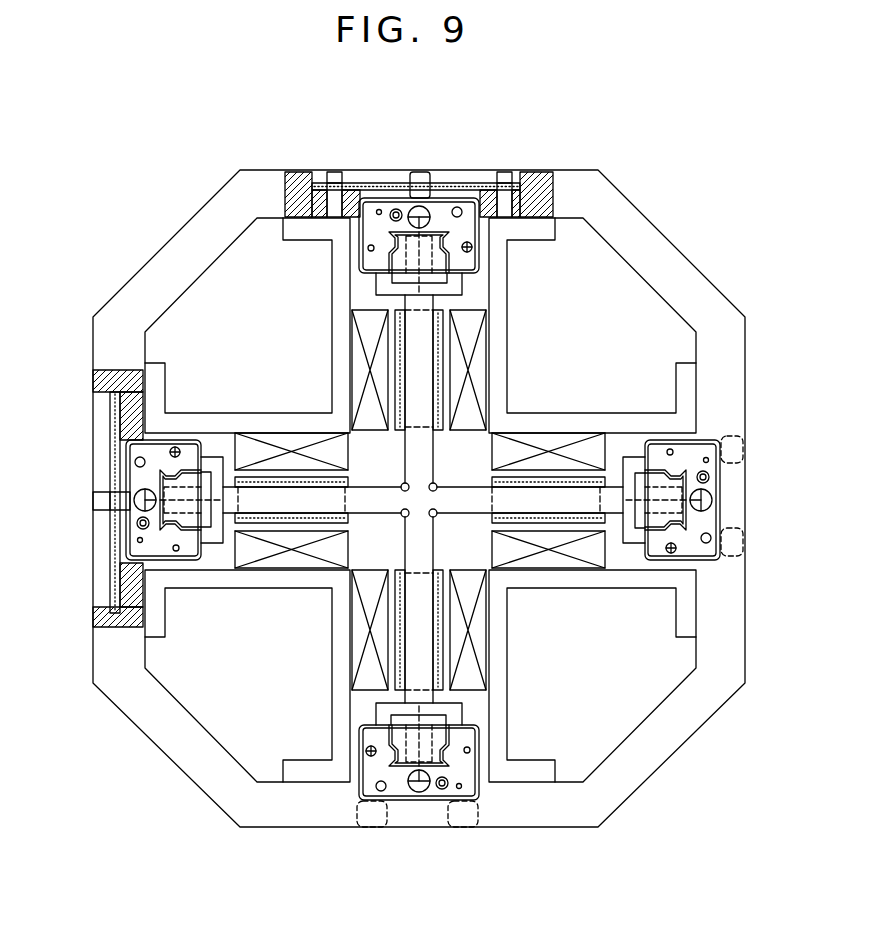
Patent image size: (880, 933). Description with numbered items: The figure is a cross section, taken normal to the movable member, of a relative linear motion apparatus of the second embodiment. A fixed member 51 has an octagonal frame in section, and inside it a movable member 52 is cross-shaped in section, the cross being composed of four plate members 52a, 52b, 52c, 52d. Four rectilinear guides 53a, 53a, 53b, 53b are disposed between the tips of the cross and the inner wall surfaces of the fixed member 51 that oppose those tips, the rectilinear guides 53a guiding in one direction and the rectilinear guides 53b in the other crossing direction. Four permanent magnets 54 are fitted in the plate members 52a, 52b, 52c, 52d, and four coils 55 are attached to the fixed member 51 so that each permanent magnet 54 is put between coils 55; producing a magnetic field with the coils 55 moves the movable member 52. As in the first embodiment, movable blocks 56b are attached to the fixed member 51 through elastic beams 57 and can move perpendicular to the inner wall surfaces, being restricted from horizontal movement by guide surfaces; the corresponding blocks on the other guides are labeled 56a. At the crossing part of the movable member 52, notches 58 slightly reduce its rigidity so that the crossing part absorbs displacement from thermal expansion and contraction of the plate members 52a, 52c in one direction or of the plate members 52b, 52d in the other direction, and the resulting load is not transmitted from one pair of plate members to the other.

The fixed member 51 is at (680, 250).
The movable member 52 is at (426, 499).
The plate member 52a is at (426, 352).
The plate member 52b is at (577, 503).
The plate member 52c is at (410, 632).
The plate member 52d is at (258, 497).
The rectilinear guide 53a is at (684, 452).
The rectilinear guide 53b is at (440, 217).
The permanent magnet 54 is at (578, 446).
The coil 55 is at (556, 476).
The guide rail stopper 56a is at (716, 462).
The movable block 56b is at (503, 197).
The elastic beam 57 is at (373, 183).
The notch 58 is at (436, 484).